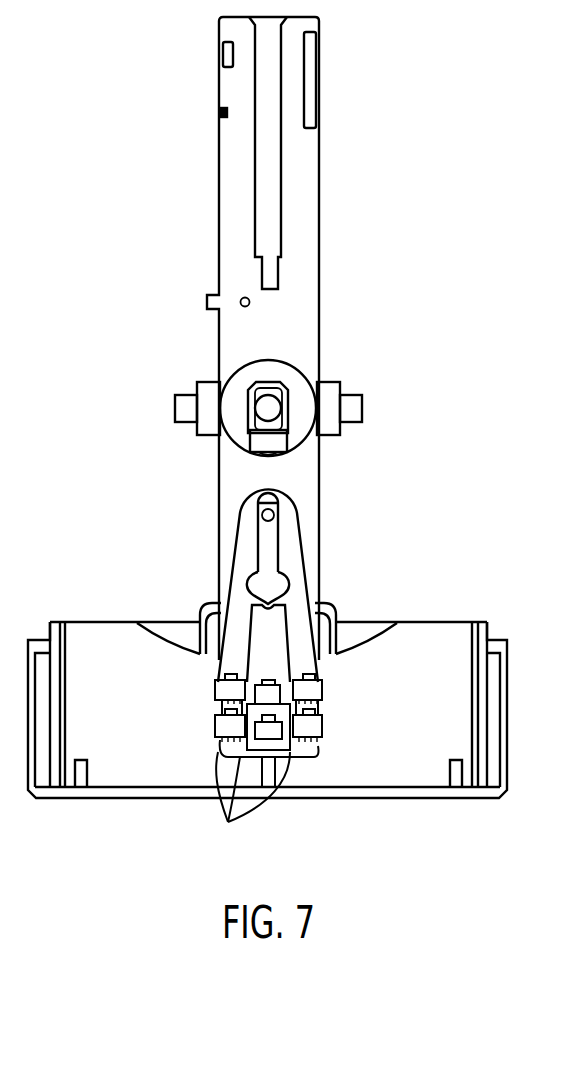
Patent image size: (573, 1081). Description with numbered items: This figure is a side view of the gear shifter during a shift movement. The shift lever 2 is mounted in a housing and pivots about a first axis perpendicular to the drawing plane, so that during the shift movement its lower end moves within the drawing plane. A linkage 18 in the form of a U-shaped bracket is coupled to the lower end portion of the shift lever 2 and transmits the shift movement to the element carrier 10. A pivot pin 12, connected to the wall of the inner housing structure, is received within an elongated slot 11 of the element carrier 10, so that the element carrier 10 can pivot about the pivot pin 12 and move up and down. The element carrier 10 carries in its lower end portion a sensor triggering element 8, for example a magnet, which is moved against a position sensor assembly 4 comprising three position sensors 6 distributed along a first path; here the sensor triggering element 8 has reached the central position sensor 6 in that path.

The shift lever 2 is at (340, 180).
The position sensor assembly 4 is at (260, 730).
The position sensors 6 is at (253, 802).
The sensor triggering element 8 is at (283, 712).
The element carrier 10 is at (271, 585).
The elongated slot 11 is at (258, 546).
The pivot pin 12 is at (274, 516).
The linkage 18 is at (337, 630).